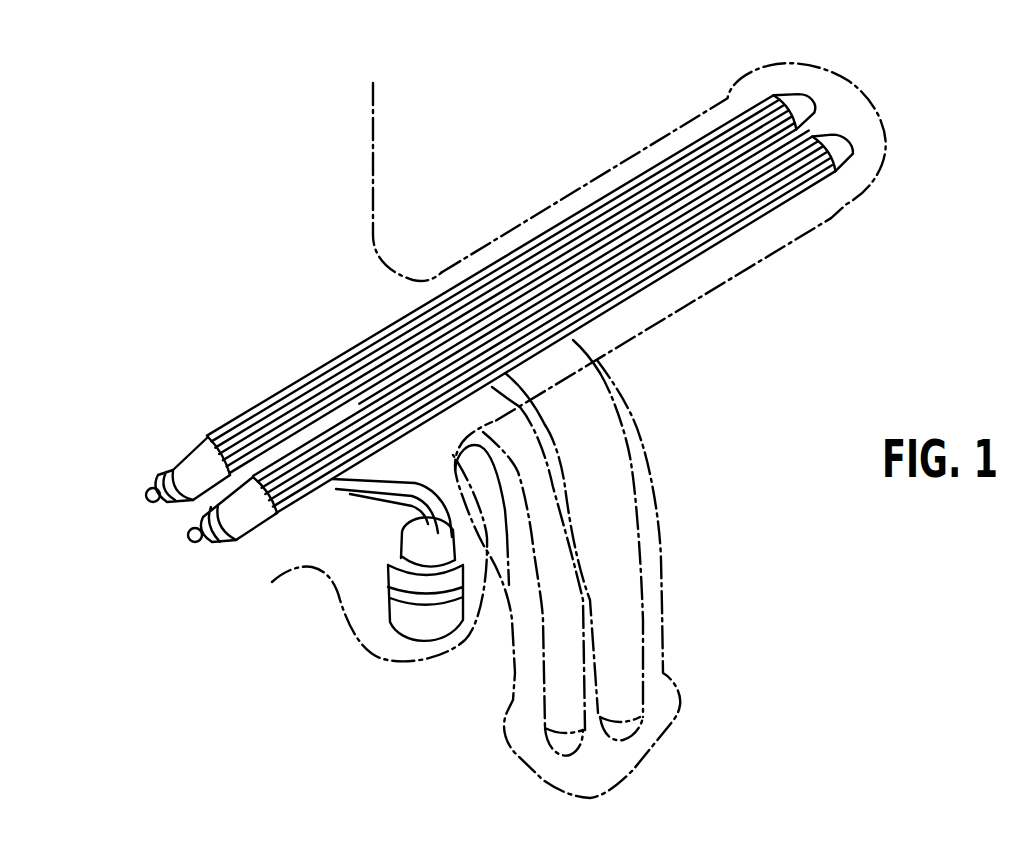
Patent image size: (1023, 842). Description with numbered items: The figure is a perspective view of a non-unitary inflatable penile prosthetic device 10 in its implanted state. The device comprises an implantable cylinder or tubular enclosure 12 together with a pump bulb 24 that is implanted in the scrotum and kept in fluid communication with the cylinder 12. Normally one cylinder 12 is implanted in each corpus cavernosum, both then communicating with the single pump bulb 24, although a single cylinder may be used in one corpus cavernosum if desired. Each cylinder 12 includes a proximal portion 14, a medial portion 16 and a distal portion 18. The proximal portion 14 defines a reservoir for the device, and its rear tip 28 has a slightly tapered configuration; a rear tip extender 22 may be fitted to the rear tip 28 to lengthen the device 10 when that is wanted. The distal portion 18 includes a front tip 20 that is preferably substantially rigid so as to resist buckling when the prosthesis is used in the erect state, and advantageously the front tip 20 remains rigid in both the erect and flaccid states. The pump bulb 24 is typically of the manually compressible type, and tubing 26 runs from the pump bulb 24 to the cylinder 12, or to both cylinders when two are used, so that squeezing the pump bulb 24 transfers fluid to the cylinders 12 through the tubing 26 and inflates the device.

The non-unitary inflatable penile prosthetic device 10 is at (481, 269).
The implantable cylinder 12 is at (335, 357).
The proximal portion 14 is at (232, 421).
The medial portion 16 is at (507, 253).
The distal portion 18 is at (733, 120).
The front tip 20 is at (797, 108).
The rear tip extender 22 is at (148, 510).
The pump bulb 24 is at (422, 645).
The tubing 26 is at (367, 486).
The rear tip 28 is at (192, 462).